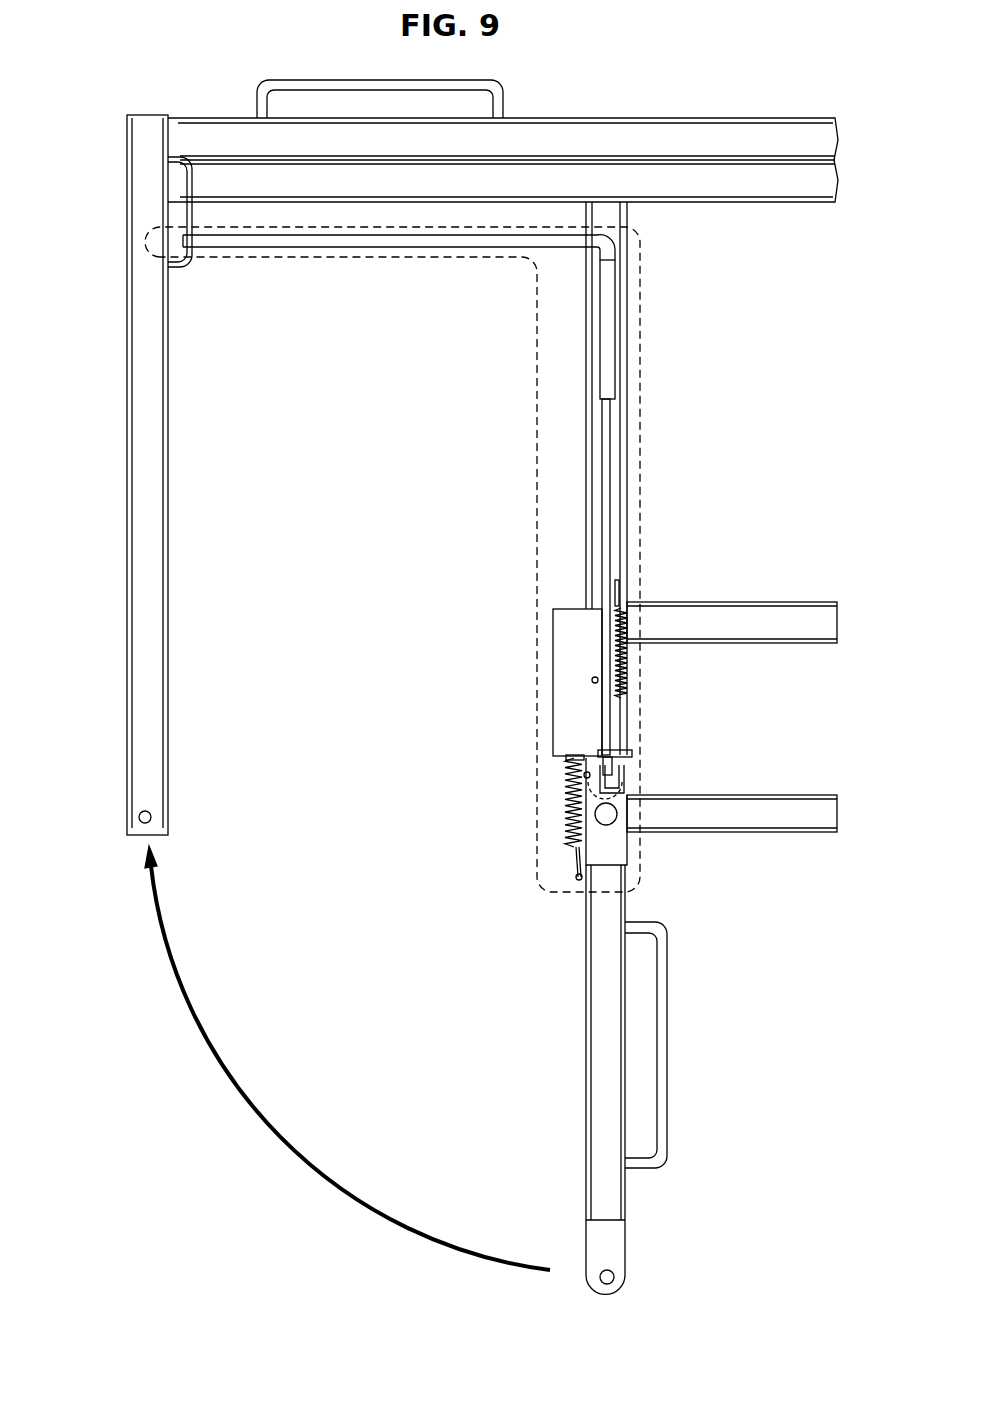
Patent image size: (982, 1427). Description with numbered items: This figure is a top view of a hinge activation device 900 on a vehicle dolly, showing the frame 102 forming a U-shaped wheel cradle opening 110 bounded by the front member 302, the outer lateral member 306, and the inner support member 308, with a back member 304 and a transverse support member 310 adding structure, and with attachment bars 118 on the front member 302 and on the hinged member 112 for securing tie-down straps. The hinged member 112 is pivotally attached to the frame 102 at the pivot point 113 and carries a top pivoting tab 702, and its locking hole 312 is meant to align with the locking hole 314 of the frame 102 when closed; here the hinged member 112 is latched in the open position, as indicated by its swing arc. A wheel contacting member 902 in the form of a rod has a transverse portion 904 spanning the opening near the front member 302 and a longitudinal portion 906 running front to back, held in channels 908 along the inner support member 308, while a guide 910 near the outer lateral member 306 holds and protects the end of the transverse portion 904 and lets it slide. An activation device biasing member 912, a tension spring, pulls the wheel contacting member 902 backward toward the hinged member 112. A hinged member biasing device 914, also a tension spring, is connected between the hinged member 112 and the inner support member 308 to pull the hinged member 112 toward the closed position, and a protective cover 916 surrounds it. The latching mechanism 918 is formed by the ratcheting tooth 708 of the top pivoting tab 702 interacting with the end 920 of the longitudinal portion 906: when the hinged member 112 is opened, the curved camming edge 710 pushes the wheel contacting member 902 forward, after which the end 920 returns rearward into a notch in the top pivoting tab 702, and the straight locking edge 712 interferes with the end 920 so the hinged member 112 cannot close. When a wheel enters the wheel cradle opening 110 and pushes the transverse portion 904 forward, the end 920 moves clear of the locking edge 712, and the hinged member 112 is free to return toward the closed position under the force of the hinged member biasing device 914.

The frame 102 is at (803, 100).
The wheel cradle opening 110 is at (366, 548).
The hinged member 112 is at (618, 1192).
The pivot point 113 is at (608, 818).
The attachment bar 118 is at (300, 79).
The front member 302 is at (620, 172).
The back member 304 is at (800, 797).
The outer lateral member 306 is at (152, 557).
The inner support member 308 is at (617, 412).
The transverse support member 310 is at (800, 604).
The locking hole 312 is at (614, 1277).
The locking hole 314 is at (139, 817).
The top pivoting tab 702 is at (615, 852).
The ratcheting tooth 708 is at (575, 793).
The camming edge 710 is at (573, 760).
The locking edge 712 is at (610, 773).
The hinge activation device 900 is at (642, 438).
The wheel contacting member 902 is at (454, 245).
The transverse portion 904 is at (368, 243).
The longitudinal portion 906 is at (608, 474).
The channel 908 is at (608, 342).
The guide 910 is at (186, 182).
The activation device biasing member 912 is at (628, 662).
The hinged member biasing device 914 is at (587, 775).
The protective cover 916 is at (563, 679).
The latching mechanism 918 is at (630, 753).
The end of the longitudinal portion 920 is at (612, 790).